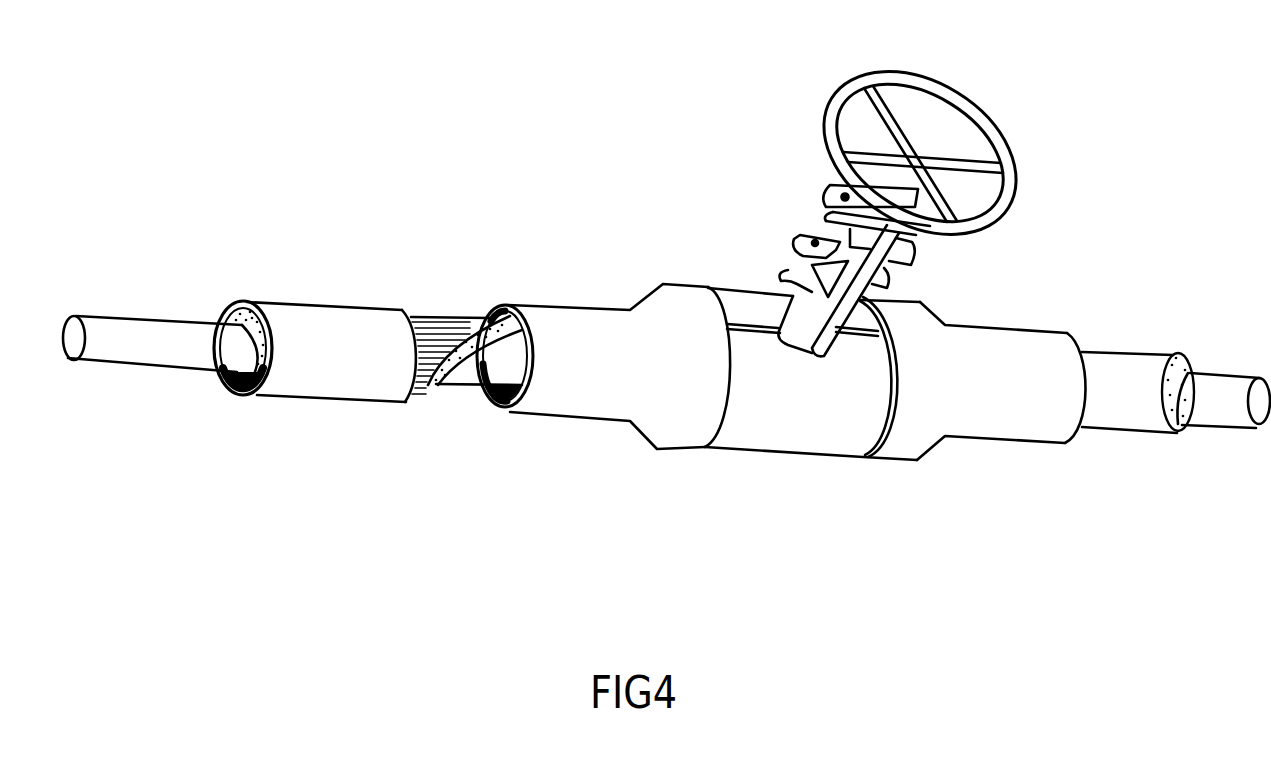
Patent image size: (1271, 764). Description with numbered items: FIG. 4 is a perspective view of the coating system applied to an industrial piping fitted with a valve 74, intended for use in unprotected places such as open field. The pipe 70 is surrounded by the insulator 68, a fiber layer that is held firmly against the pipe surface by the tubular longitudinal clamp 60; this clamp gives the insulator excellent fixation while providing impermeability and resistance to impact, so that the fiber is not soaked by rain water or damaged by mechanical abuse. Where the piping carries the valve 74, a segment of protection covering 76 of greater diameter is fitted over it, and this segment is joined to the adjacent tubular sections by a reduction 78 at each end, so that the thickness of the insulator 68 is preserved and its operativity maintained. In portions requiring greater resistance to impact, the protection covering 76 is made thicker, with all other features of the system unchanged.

The tubular longitudinal clamp 60 is at (805, 433).
The insulator 68 is at (247, 322).
The pipe 70 is at (148, 352).
The valve 74 is at (804, 236).
The protection covering 76 is at (732, 303).
The reduction 78 is at (577, 420).